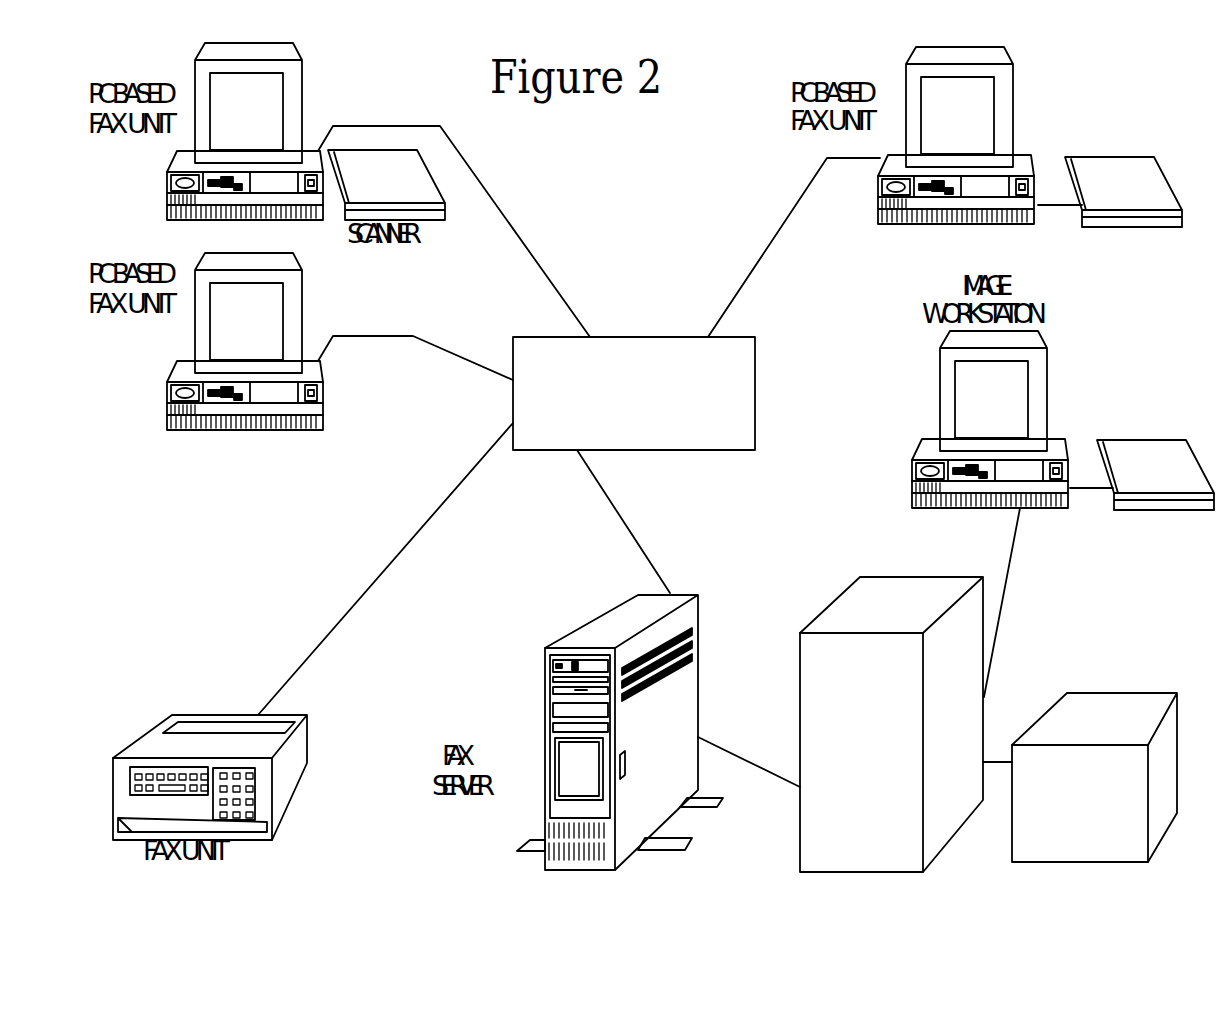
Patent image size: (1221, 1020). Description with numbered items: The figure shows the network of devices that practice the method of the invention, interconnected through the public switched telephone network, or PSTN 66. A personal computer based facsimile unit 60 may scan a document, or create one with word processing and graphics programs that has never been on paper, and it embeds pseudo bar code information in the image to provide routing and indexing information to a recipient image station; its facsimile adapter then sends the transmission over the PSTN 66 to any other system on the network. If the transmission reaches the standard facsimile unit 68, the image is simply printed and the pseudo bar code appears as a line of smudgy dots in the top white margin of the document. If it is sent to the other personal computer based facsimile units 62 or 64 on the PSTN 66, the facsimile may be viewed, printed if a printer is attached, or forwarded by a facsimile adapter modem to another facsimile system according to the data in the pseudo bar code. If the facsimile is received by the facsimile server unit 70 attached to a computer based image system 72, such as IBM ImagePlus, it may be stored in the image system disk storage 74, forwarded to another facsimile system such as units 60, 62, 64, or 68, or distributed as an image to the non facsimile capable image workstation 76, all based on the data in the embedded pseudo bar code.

The personal computer based facsimile unit 60 is at (263, 127).
The personal computer based facsimile unit 62 is at (257, 337).
The personal computer based facsimile unit 64 is at (965, 137).
The PSTN 66 is at (692, 350).
The standard facsimile unit 68 is at (227, 703).
The facsimile server unit 70 is at (623, 622).
The computer based image system 72 is at (848, 605).
The image system disk storage 74 is at (1127, 723).
The image workstation 76 is at (992, 415).